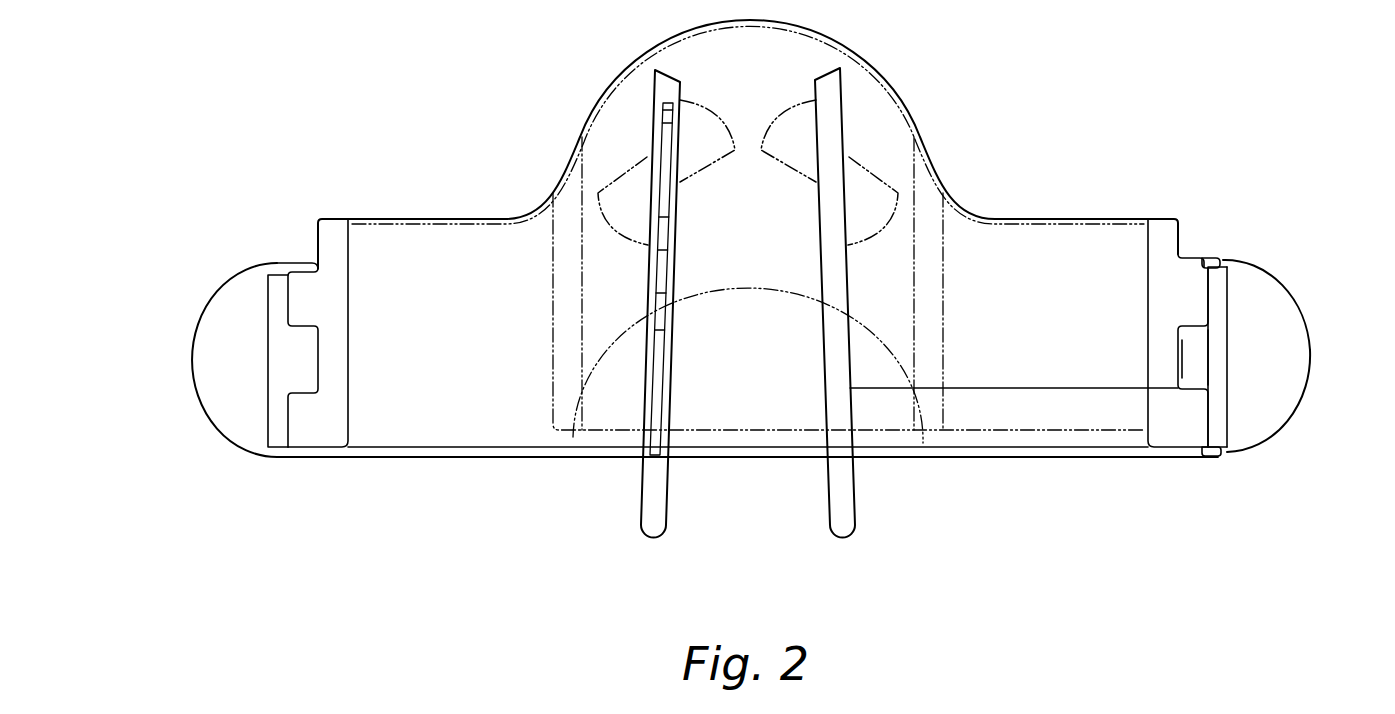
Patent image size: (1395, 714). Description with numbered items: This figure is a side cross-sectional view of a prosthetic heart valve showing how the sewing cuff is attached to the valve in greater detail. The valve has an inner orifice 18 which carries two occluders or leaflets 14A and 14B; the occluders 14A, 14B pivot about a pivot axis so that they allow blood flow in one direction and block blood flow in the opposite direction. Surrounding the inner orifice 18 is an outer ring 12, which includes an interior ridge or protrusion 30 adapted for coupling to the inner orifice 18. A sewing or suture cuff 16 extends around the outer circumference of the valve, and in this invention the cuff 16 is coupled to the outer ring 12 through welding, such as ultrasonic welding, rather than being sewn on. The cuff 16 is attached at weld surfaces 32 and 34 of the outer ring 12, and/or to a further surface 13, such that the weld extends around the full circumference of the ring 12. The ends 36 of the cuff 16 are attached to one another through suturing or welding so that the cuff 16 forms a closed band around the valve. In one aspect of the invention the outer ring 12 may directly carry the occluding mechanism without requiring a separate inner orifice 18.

The outer ring 12 is at (1197, 353).
The surface 13 is at (1228, 368).
The occluder 14A is at (852, 536).
The occluder 14B is at (642, 536).
The sewing cuff 16 is at (1262, 428).
The inner orifice 18 is at (1068, 216).
The interior ridge 30 is at (1178, 358).
The weld surface 32 is at (1218, 262).
The weld surface 34 is at (1218, 452).
The ends of cuff 36 is at (183, 388).